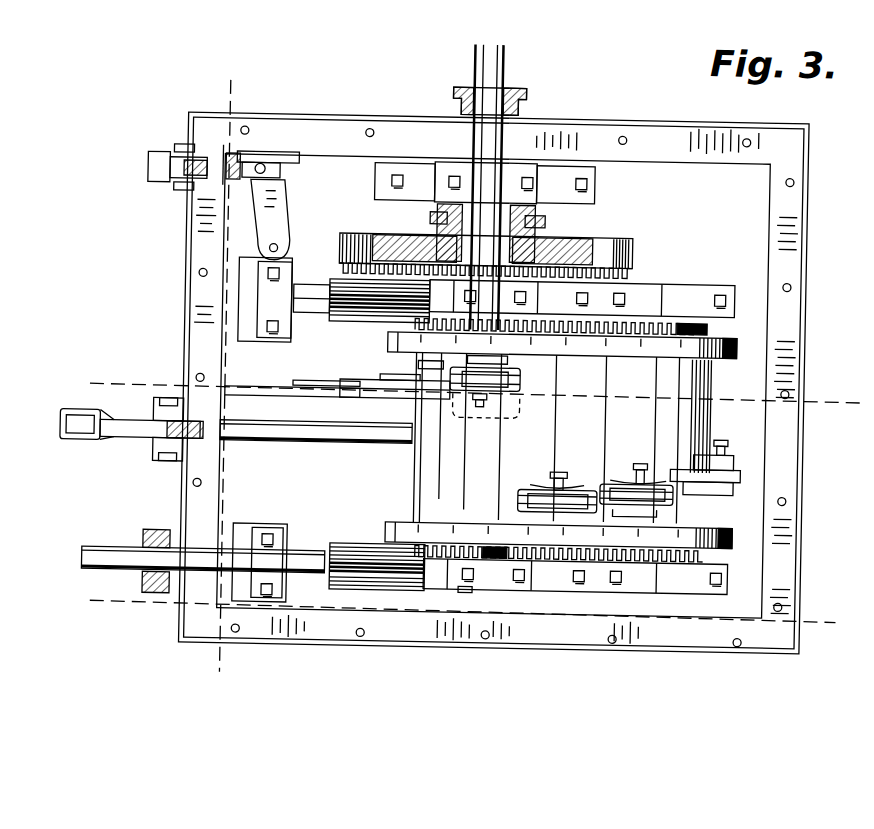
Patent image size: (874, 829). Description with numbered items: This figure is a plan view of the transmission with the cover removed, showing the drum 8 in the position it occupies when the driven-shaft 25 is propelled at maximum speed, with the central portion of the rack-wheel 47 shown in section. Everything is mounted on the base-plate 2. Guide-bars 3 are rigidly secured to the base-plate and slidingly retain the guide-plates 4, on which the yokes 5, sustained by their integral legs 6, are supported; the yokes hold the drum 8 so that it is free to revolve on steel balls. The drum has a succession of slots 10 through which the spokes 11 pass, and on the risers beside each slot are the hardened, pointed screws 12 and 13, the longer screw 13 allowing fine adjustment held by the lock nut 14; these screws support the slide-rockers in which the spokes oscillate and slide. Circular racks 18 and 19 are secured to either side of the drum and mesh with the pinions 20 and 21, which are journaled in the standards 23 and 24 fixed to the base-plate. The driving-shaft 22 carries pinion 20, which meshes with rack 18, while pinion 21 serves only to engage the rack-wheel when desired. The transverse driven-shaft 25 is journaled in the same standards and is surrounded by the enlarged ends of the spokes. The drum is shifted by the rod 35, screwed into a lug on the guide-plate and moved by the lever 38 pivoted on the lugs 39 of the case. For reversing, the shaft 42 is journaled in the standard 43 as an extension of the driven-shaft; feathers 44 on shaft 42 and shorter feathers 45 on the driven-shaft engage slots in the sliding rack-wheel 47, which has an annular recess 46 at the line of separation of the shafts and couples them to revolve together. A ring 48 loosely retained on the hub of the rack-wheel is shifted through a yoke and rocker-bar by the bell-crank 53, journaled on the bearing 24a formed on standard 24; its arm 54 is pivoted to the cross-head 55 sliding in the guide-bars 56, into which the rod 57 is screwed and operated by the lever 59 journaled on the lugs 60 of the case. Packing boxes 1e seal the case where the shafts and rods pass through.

The base-plate 2 is at (805, 504).
The guide-bars 3 is at (578, 475).
The guide-plates 4 is at (467, 395).
The yokes 5 is at (471, 529).
The legs 6 is at (457, 612).
The drum 8 is at (420, 481).
The slots 10 is at (512, 373).
The spokes 11 is at (303, 387).
The screw 12 is at (642, 506).
The screw 13 is at (719, 441).
The lock nut 14 is at (729, 451).
The circular rack 18 is at (640, 557).
The circular rack 19 is at (684, 330).
The pinion 20 is at (335, 548).
The pinion 21 is at (349, 330).
The driving-shaft 22 is at (103, 556).
The standard 23 is at (541, 586).
The standard 24 is at (566, 312).
The bearing 24a is at (256, 265).
The driven-shaft 25 is at (467, 592).
The rod 35 is at (311, 444).
The lever 38 is at (133, 435).
The lugs 39 is at (156, 454).
The shaft 42 is at (486, 82).
The standard 43 is at (411, 180).
The feathers 44 is at (542, 216).
The feathers 45 is at (534, 234).
The annular recess 46 is at (434, 229).
The rack-wheel 47 is at (630, 250).
The ring 48 is at (540, 224).
The bell-crank 53 is at (300, 249).
The arm 54 is at (270, 207).
The cross-head 55 is at (266, 174).
The guide-bars 56 is at (253, 158).
The rod 57 is at (223, 178).
The lever 59 is at (153, 157).
The lugs 60 is at (166, 158).
The packing boxes 1e is at (515, 97).